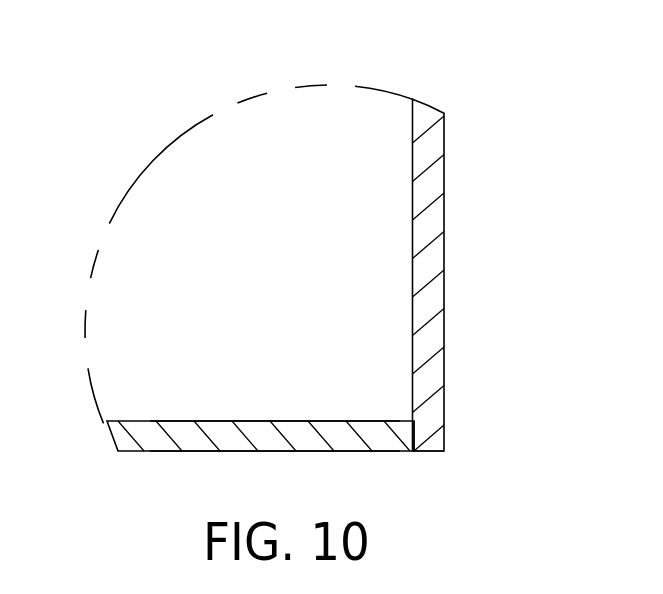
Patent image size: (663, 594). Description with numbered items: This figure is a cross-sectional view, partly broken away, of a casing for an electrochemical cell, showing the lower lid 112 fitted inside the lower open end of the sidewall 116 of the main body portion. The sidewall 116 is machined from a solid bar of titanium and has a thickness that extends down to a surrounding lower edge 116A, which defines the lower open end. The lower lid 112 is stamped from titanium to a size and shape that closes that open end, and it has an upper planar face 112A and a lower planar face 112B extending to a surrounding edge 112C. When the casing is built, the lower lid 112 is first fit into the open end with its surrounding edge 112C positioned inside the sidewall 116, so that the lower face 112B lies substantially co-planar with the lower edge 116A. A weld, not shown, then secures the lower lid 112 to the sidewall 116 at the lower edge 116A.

The lower lid 112 is at (145, 437).
The upper planar face 112A is at (223, 409).
The lower planar face 112B is at (216, 462).
The surrounding edge 112C is at (416, 429).
The sidewall 116 is at (445, 256).
The lower edge 116A is at (428, 453).